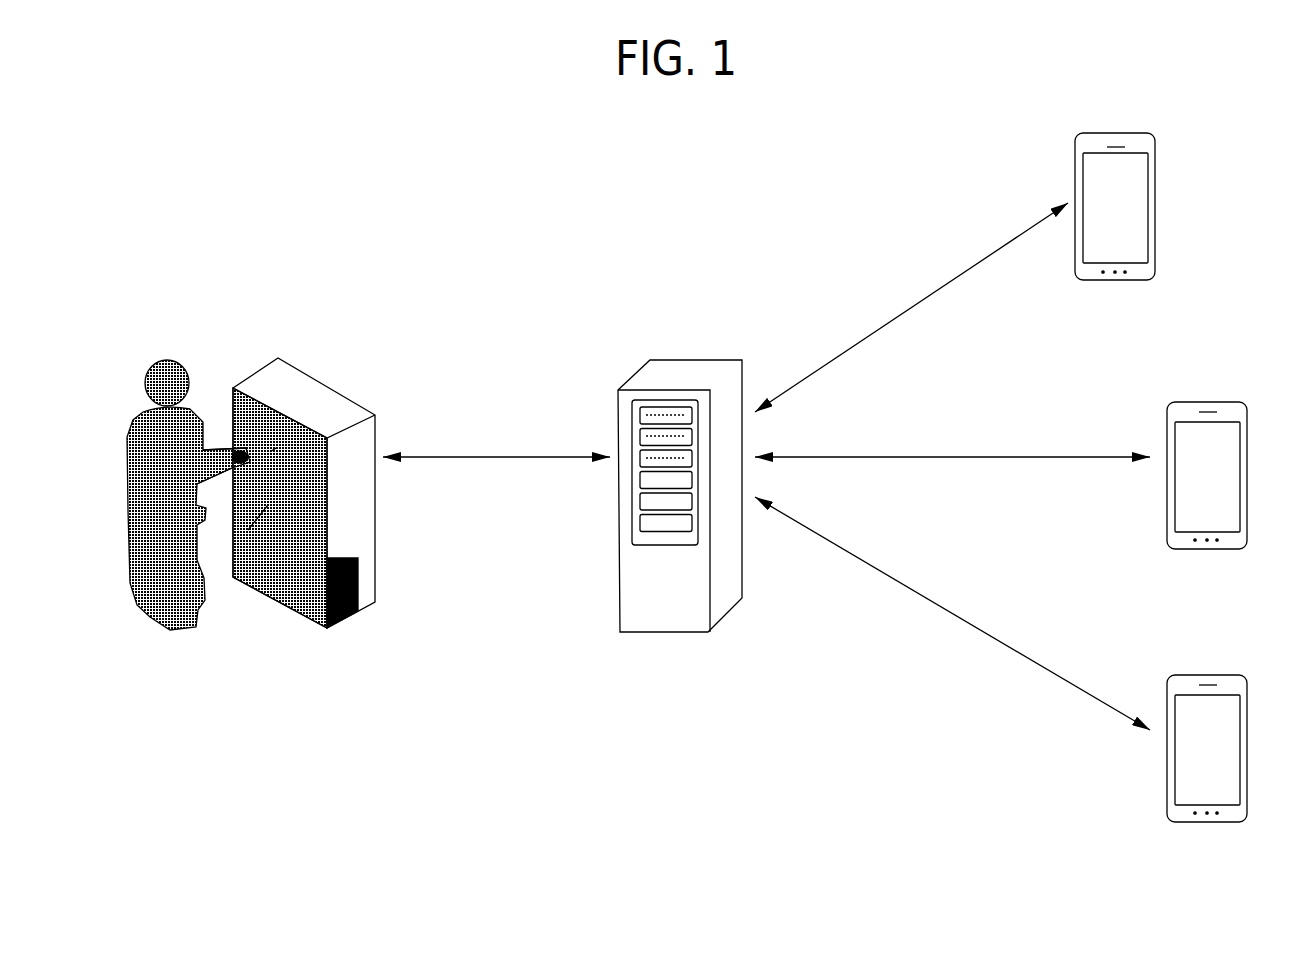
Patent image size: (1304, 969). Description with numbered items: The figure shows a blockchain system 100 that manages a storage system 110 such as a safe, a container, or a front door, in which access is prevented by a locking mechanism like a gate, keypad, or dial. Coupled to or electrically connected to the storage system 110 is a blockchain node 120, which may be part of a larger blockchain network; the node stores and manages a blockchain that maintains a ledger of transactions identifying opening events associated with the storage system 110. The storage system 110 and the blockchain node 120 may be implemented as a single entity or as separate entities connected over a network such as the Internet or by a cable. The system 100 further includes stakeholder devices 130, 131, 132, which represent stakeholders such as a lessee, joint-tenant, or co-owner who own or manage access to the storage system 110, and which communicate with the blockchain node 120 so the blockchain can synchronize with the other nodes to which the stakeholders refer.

The blockchain system 100 is at (108, 150).
The storage system 110 is at (293, 365).
The blockchain node 120 is at (630, 370).
The stakeholder device 130 is at (1155, 150).
The stakeholder device 131 is at (1247, 420).
The stakeholder device 132 is at (1245, 712).